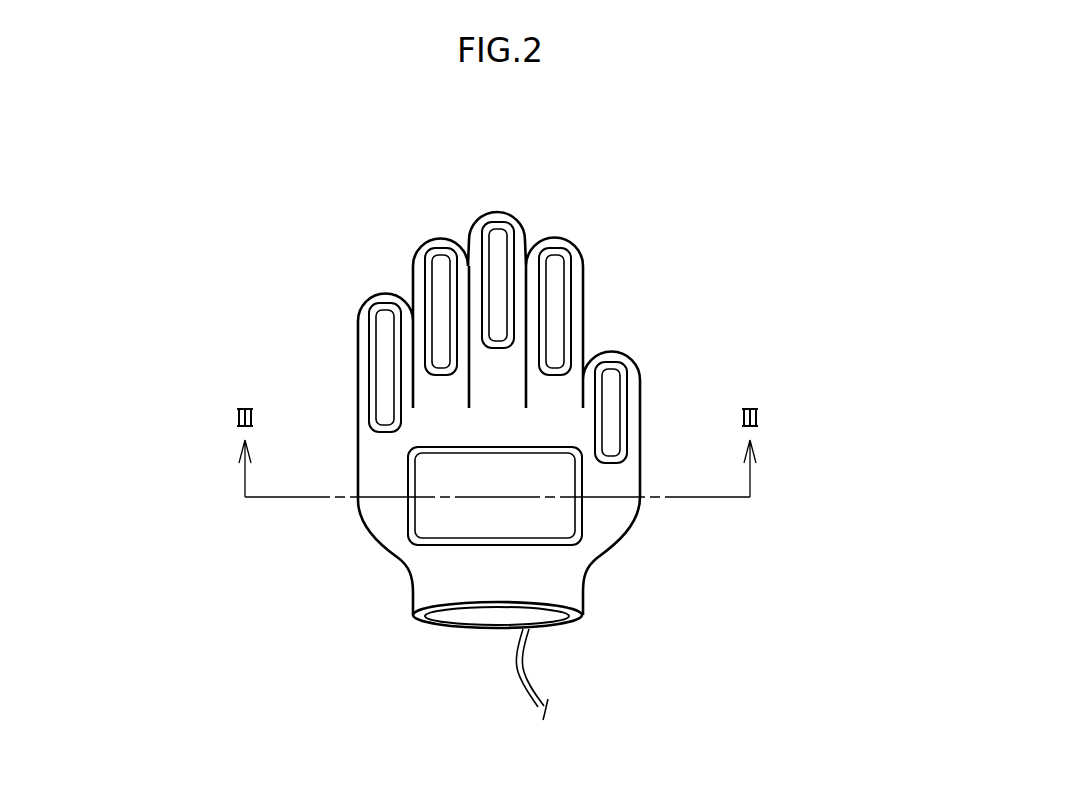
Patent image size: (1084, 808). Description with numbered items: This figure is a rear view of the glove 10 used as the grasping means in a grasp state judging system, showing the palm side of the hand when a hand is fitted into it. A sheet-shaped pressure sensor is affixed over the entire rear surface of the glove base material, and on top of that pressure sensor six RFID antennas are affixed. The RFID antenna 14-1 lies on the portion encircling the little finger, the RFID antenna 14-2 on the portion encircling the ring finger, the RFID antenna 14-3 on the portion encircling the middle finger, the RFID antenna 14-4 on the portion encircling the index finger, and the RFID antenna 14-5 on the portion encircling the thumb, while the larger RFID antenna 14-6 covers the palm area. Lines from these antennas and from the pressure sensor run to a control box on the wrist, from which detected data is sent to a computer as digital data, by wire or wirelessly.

The glove 10 is at (548, 592).
The RFID antenna 14-1 is at (388, 303).
The RFID antenna 14-2 is at (443, 248).
The RFID antenna 14-3 is at (498, 223).
The RFID antenna 14-4 is at (552, 248).
The RFID antenna 14-5 is at (610, 362).
The RFID antenna 14-6 is at (408, 473).